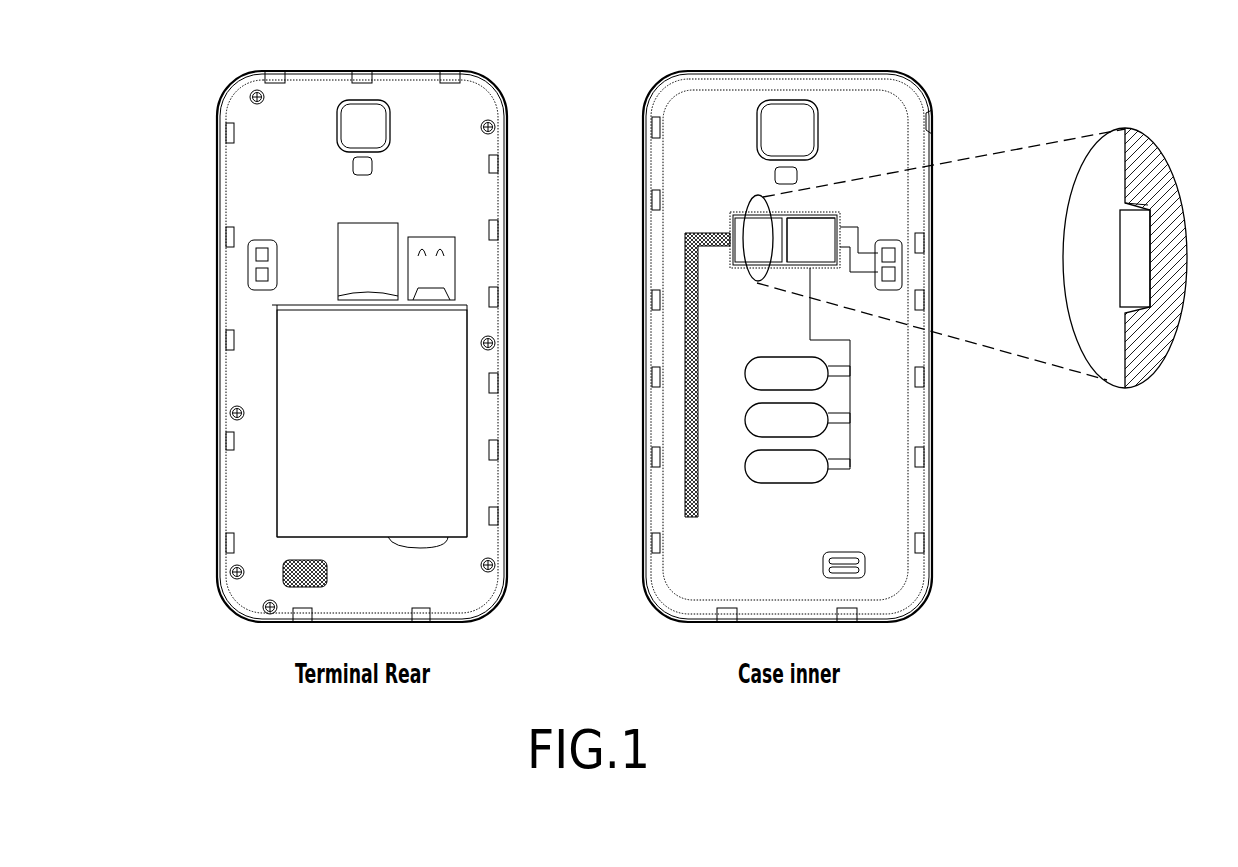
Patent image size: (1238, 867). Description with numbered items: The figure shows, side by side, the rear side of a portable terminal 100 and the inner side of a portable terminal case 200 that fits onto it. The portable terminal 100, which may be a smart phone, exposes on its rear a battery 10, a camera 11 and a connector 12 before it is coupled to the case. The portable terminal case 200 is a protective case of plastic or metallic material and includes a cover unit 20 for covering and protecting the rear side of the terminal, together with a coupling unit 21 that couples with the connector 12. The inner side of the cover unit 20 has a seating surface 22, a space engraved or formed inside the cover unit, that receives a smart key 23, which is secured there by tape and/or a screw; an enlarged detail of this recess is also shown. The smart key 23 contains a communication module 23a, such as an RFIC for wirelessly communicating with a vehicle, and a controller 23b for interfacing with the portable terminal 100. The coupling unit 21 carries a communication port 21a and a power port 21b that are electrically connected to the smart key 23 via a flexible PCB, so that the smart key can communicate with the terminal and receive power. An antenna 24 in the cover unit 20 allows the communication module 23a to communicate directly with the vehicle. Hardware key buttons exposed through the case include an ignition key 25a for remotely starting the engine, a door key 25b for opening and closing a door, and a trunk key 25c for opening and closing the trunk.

The portable terminal 100 is at (464, 45).
The battery 10 is at (292, 378).
The camera 11 is at (345, 103).
The connector 12 is at (248, 262).
The portable terminal case 200 is at (889, 45).
The cover unit 20 is at (908, 158).
The coupling unit 21 is at (902, 263).
The communication port 21a is at (895, 253).
The power port 21b is at (895, 278).
The seating surface 22 is at (840, 217).
The smart key 23 is at (730, 216).
The communication module 23a is at (770, 218).
The controller 23b is at (811, 217).
The antenna 24 is at (685, 414).
The ignition key 25a is at (830, 363).
The door key 25b is at (830, 410).
The trunk key 25c is at (830, 457).